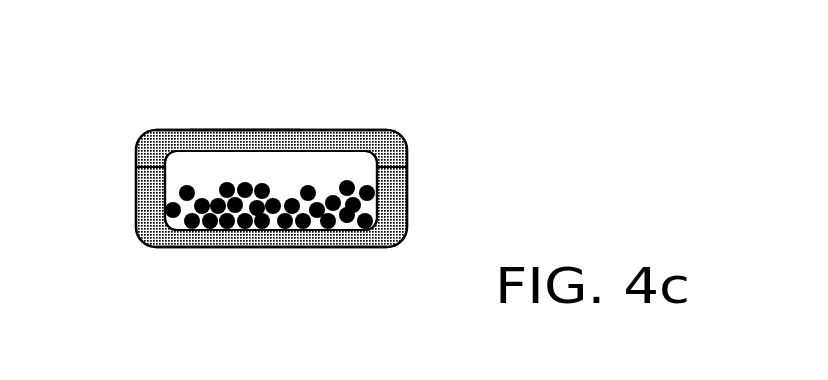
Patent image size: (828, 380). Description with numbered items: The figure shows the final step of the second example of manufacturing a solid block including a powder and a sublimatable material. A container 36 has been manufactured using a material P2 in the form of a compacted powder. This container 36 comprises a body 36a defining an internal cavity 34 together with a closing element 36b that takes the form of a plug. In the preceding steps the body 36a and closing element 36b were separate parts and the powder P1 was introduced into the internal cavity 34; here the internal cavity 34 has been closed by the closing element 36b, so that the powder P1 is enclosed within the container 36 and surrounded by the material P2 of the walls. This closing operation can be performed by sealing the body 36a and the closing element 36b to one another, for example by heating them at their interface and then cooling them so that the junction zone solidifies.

The internal cavity 34 is at (167, 191).
The container 36 is at (428, 142).
The body 36a is at (367, 243).
The closing element 36b is at (313, 145).
The powder P1 is at (174, 218).
The material P2 is at (238, 145).